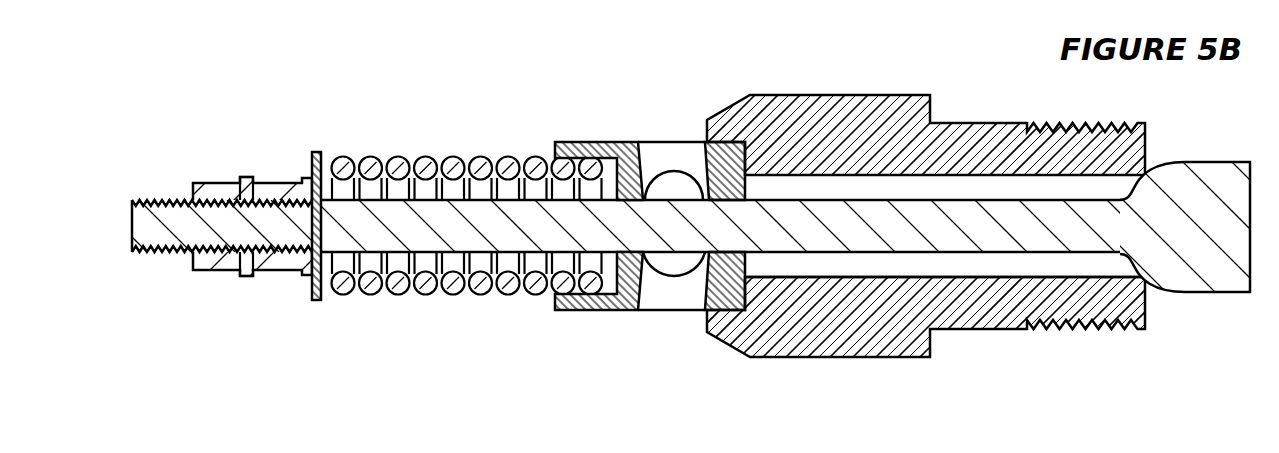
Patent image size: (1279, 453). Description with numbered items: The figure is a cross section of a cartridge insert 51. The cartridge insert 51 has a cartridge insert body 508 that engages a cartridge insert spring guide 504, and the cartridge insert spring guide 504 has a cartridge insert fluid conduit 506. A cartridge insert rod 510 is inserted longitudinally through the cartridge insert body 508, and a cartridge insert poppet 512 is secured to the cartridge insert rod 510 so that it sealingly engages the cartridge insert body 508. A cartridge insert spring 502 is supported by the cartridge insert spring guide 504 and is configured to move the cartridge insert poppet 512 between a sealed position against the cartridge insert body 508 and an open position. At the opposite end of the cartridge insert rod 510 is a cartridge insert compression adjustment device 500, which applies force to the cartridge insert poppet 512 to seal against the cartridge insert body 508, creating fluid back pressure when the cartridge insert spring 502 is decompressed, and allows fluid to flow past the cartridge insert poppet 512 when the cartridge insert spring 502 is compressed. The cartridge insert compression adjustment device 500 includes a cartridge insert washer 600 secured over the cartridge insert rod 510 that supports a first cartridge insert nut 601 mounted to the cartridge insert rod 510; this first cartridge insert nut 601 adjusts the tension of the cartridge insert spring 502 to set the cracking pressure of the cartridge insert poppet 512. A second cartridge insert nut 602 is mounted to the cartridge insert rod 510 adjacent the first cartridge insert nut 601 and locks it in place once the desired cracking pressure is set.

The cartridge insert 51 is at (148, 53).
The cartridge insert compression adjustment device 500 is at (227, 152).
The cartridge insert spring 502 is at (457, 157).
The cartridge insert spring guide 504 is at (595, 142).
The cartridge insert fluid conduit 506 is at (670, 147).
The cartridge insert body 508 is at (833, 94).
The cartridge insert rod 510 is at (988, 253).
The cartridge insert poppet 512 is at (1218, 160).
The cartridge insert washer 600 is at (315, 301).
The first cartridge insert nut 601 is at (280, 270).
The second cartridge insert nut 602 is at (215, 270).